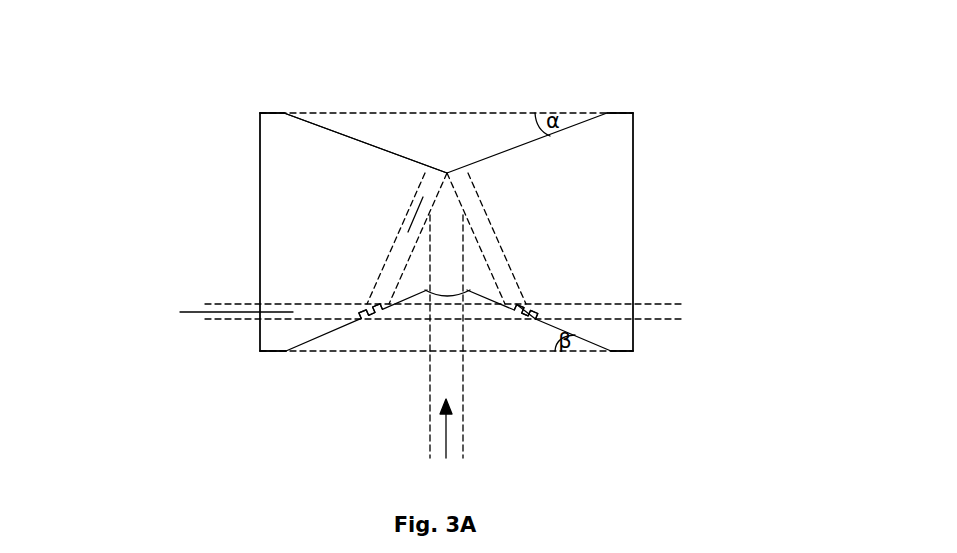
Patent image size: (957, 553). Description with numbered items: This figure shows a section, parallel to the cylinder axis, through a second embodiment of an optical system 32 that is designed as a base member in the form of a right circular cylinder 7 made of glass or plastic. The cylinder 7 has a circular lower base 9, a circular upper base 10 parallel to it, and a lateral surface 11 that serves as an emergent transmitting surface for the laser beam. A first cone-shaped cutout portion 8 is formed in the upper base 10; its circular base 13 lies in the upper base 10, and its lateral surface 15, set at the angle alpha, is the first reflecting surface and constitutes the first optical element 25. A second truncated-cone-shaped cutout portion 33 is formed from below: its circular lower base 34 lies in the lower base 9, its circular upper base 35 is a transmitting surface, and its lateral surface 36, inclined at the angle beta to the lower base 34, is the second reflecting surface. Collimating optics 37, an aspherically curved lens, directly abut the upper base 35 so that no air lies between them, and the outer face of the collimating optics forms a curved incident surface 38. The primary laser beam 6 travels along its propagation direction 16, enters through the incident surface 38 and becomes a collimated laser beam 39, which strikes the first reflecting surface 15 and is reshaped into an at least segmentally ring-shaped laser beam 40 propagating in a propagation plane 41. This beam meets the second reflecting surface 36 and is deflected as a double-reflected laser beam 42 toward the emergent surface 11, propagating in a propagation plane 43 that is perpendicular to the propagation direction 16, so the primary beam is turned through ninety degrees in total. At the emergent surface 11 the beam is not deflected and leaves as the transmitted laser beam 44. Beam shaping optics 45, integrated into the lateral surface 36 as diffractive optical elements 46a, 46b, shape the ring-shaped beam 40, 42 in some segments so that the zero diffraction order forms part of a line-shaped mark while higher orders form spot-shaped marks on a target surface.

The primary laser beam 6 is at (462, 437).
The right circular cylinder 7 is at (635, 257).
The first cone-shaped cutout portion 8 is at (440, 141).
The lower base 9 is at (271, 352).
The upper base 10 is at (272, 113).
The lateral surface 11 is at (258, 172).
The circular base 13 is at (462, 113).
The lateral surface 15 is at (338, 150).
The propagation direction 16 is at (445, 449).
The first optical element 25 is at (383, 141).
The optical system 32 is at (162, 222).
The second truncated-cone-shaped cutout portion 33 is at (407, 325).
The lower base 34 is at (585, 365).
The upper base 35 is at (474, 280).
The lateral surface 36 is at (330, 348).
The collimating optics 37 is at (446, 290).
The incident surface 38 is at (445, 297).
The collimated laser beam 39 is at (427, 276).
The ring-shaped laser beam 40 is at (485, 213).
The propagation plane 41 is at (409, 204).
The double-reflected laser beam 42 is at (302, 304).
The propagation plane 43 is at (204, 304).
The transmitted laser beam 44 is at (220, 319).
The beam shaping optics 45 is at (533, 305).
The diffractive optical element 46a is at (513, 318).
The diffractive optical element 46b is at (383, 318).